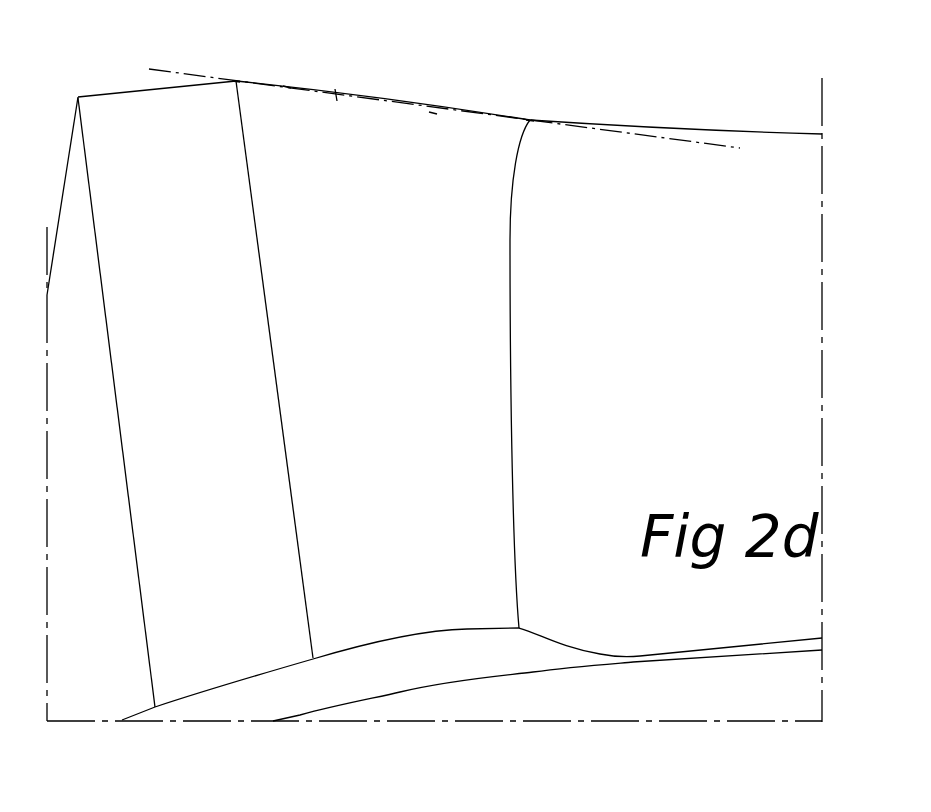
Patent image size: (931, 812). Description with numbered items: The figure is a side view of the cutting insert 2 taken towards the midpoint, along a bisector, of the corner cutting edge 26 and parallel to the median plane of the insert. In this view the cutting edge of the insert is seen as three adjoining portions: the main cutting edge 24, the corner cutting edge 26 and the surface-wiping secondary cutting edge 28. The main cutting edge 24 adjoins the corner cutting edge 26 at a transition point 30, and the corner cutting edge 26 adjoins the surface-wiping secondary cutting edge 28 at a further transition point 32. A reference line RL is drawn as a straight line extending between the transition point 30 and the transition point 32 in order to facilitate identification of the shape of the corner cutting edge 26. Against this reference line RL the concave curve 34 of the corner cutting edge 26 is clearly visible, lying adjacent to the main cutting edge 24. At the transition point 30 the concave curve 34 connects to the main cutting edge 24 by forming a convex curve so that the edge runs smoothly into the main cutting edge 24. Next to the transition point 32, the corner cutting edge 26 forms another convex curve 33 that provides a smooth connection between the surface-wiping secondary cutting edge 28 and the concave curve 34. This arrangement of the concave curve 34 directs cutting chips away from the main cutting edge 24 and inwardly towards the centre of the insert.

The cutting insert 2 is at (800, 329).
The main cutting edge 24 is at (530, 105).
The corner cutting edge 26 is at (530, 105).
The surface-wiping secondary cutting edge 28 is at (137, 93).
The transition point 30 is at (530, 122).
The transition point 32 is at (235, 83).
The convex curve 33 is at (287, 87).
The concave curve 34 is at (433, 113).
The reference line RL is at (462, 118).